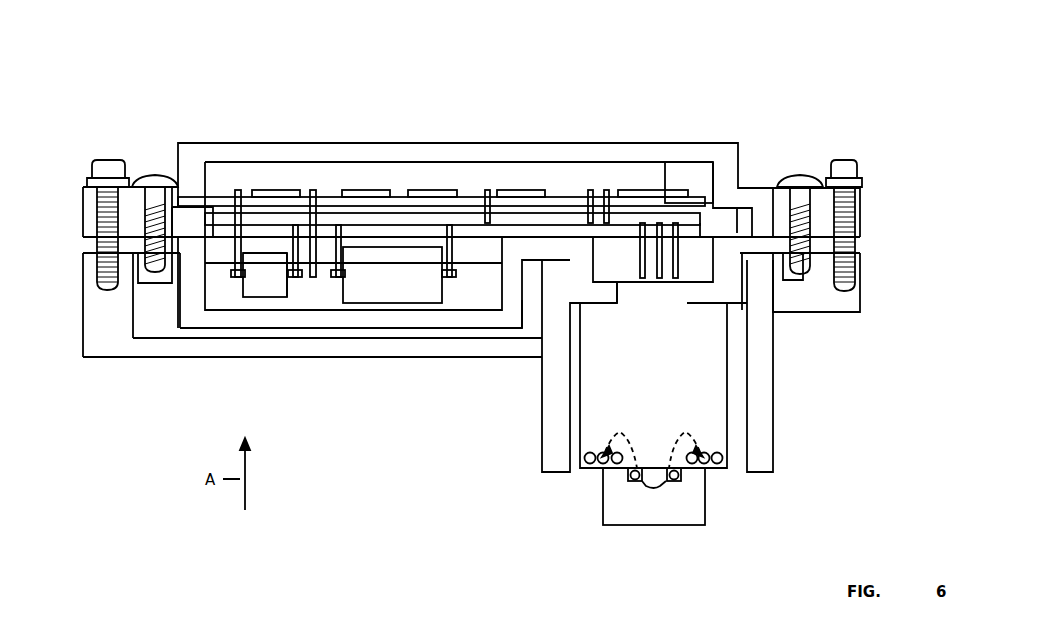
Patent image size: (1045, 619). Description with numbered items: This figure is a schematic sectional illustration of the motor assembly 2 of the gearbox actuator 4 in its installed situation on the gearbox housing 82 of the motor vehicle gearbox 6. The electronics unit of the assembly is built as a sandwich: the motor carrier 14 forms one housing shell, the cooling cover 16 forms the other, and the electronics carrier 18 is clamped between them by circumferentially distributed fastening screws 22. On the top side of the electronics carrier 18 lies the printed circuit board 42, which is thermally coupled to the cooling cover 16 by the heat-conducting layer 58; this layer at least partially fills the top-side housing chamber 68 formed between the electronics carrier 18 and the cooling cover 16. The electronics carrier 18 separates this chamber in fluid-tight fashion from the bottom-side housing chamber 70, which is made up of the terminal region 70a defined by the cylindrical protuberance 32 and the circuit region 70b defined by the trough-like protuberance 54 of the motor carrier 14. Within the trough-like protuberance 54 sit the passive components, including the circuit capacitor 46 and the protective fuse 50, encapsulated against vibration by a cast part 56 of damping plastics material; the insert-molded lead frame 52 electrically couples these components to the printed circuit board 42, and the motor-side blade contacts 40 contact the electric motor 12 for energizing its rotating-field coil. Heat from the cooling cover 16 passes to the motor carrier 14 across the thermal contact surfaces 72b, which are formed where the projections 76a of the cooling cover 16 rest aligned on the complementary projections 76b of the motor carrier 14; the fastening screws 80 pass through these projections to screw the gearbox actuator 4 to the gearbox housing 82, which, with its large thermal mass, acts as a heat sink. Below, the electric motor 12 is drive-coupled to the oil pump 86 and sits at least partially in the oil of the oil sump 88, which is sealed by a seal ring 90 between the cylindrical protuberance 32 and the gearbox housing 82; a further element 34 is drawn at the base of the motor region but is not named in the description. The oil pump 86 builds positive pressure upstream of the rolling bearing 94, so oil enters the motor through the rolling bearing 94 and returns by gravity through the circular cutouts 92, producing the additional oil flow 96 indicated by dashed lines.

The motor assembly 2 is at (823, 40).
The actuator 4 is at (755, 99).
The motor vehicle gearbox 6 is at (494, 441).
The electric motor 12 is at (653, 368).
The motor carrier 14 is at (568, 285).
The cooling cover 16 is at (297, 150).
The electronics carrier 18 is at (213, 222).
The fastening screws 22 is at (155, 176).
The cylindrical protuberance 32 is at (742, 310).
The latch 34 is at (652, 483).
The motor-side blade contact 40 is at (638, 255).
The printed circuit board 42 is at (390, 190).
The circuit capacitor 46 is at (427, 322).
The protective fuse 50 is at (318, 302).
The lead frame 52 is at (565, 215).
The trough-like protuberance 54 is at (491, 349).
The cast part 56 is at (392, 294).
The heat-conducting layer 58 is at (455, 190).
The top-side housing chamber 68 is at (694, 180).
The bottom-side housing chamber 70 is at (262, 293).
The terminal region 70a is at (666, 292).
The circuit region 70b is at (240, 248).
The thermal contact surfaces 72b is at (92, 243).
The projections of the cooling cover 76a is at (86, 208).
The projections of the motor carrier 76b is at (85, 256).
The fastening screw 80 is at (106, 160).
The gearbox housing 82 is at (110, 348).
The oil pump 86 is at (664, 515).
The oil sump 88 is at (597, 554).
The seal ring 90 is at (548, 288).
The circular cutouts 92 is at (590, 464).
The rolling bearing 94 is at (625, 480).
The oil flow 96 is at (618, 432).